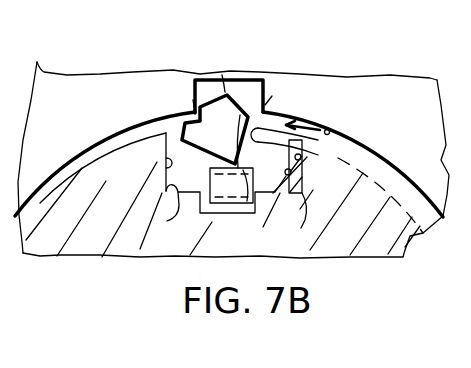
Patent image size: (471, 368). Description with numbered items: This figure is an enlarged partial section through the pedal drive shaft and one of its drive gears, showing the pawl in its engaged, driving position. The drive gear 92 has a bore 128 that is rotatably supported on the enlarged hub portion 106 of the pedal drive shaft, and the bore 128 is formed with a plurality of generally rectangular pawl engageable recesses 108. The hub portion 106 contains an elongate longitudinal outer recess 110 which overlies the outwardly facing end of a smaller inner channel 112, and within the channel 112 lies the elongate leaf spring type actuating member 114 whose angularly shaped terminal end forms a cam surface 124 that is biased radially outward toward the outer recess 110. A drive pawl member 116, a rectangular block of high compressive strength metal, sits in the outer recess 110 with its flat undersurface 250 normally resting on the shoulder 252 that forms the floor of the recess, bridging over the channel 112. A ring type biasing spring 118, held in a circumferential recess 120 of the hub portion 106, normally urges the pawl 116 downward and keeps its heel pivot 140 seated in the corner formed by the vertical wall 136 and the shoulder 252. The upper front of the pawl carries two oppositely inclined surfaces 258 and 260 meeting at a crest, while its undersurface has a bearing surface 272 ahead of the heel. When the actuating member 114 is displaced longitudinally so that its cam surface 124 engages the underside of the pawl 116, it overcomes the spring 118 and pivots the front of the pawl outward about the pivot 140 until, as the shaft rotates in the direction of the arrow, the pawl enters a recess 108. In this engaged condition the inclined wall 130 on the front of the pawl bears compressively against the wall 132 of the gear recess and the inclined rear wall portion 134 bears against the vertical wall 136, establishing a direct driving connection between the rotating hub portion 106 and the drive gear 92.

The drive gear 92 is at (152, 109).
The enlarged hub portion 106 is at (158, 142).
The pawl engageable recess 108 is at (233, 83).
The outer recess 110 is at (141, 185).
The inner channel 112 is at (170, 216).
The leaf spring type actuating member 114 is at (240, 208).
The drive pawl member 116 is at (213, 112).
The ring type biasing spring 118 is at (276, 126).
The circumferential recess 120 is at (367, 162).
The cam surface 124 is at (253, 206).
The bore 128 is at (325, 129).
The inclined wall 130 is at (133, 117).
The wall of the recess 132 is at (193, 100).
The inclined rear wall portion 134 is at (300, 187).
The vertical wall 136 is at (302, 155).
The pivot 140 is at (343, 202).
The flat undersurface 250 is at (164, 218).
The shoulder 252 is at (104, 255).
The inclined surface 258 is at (222, 75).
The inclined surface 260 is at (240, 115).
The bearing surface 272 is at (265, 105).